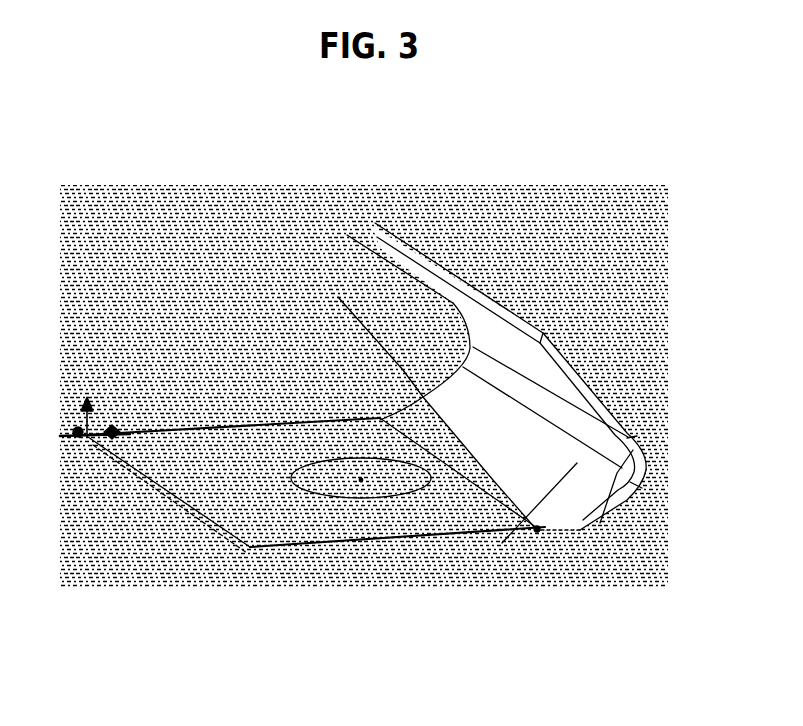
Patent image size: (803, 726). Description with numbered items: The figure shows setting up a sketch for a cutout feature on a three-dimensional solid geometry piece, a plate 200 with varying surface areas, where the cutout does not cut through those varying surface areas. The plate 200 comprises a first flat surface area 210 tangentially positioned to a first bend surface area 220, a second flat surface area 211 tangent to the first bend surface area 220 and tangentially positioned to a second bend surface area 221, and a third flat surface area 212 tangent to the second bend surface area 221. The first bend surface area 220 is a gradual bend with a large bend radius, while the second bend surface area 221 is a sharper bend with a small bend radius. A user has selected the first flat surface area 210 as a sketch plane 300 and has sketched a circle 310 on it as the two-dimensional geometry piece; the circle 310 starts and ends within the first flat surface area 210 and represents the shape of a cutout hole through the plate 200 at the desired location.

The plate 200 is at (470, 186).
The first flat surface area 210 is at (237, 447).
The second flat surface area 211 is at (502, 543).
The third flat surface area 212 is at (347, 235).
The first bend surface area 220 is at (338, 297).
The second bend surface area 221 is at (600, 523).
The sketch plane 300 is at (88, 445).
The circle 310 is at (337, 500).